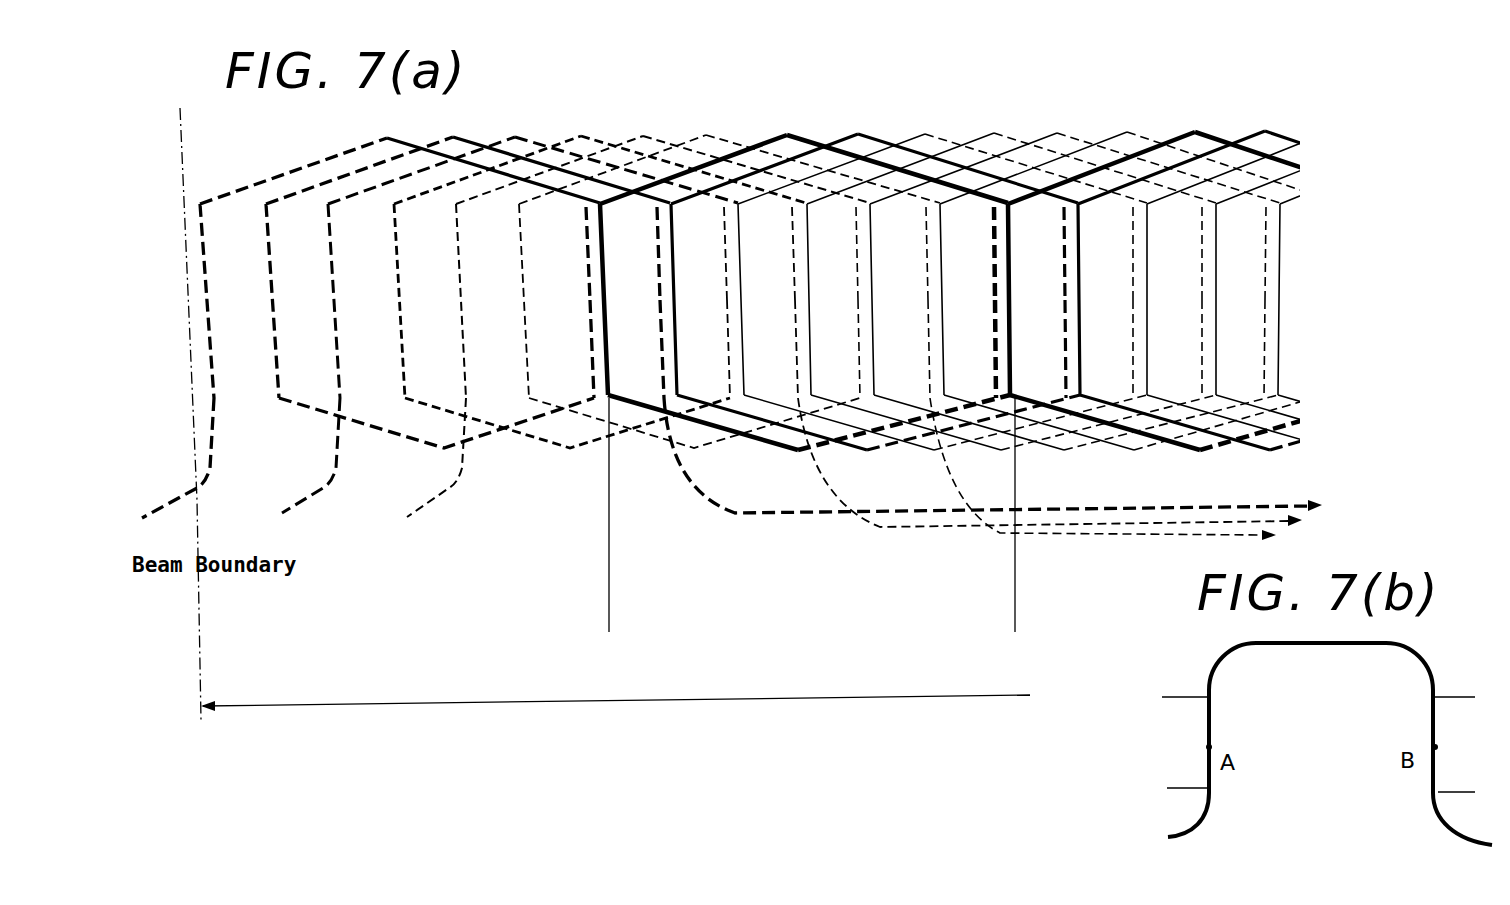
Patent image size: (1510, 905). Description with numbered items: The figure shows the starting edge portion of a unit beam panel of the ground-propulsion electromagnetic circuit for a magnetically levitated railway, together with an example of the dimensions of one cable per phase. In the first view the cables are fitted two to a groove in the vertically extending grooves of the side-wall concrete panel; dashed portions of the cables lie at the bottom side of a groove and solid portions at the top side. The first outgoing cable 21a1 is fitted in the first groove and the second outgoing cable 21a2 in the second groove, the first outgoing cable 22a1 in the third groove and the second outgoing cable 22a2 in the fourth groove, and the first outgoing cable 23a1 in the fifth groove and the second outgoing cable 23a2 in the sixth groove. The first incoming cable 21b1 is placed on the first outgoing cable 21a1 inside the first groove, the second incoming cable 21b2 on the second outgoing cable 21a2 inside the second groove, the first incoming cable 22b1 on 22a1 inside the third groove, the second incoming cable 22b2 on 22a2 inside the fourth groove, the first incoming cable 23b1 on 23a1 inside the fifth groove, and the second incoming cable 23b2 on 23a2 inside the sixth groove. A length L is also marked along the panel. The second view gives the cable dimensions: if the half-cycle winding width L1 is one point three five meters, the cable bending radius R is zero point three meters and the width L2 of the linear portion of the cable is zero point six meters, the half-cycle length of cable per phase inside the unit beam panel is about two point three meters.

The first outgoing cable 21a1 is at (603, 250).
The second outgoing cable 21a2 is at (673, 253).
The first incoming cable 21b1 is at (592, 340).
The second incoming cable 21b2 is at (665, 352).
The first outgoing cable 22a1 is at (740, 253).
The second outgoing cable 22a2 is at (808, 253).
The first incoming cable 22b1 is at (730, 340).
The second incoming cable 22b2 is at (795, 345).
The first outgoing cable 23a1 is at (870, 250).
The second outgoing cable 23a2 is at (940, 247).
The first incoming cable 23b1 is at (862, 345).
The second incoming cable 23b2 is at (930, 345).
The electrode length L is at (1013, 615).
The half-cycle winding width L1 is at (1427, 737).
The width of the linear portion of the cable L2 is at (1462, 796).
The cable bending radius R is at (1408, 666).